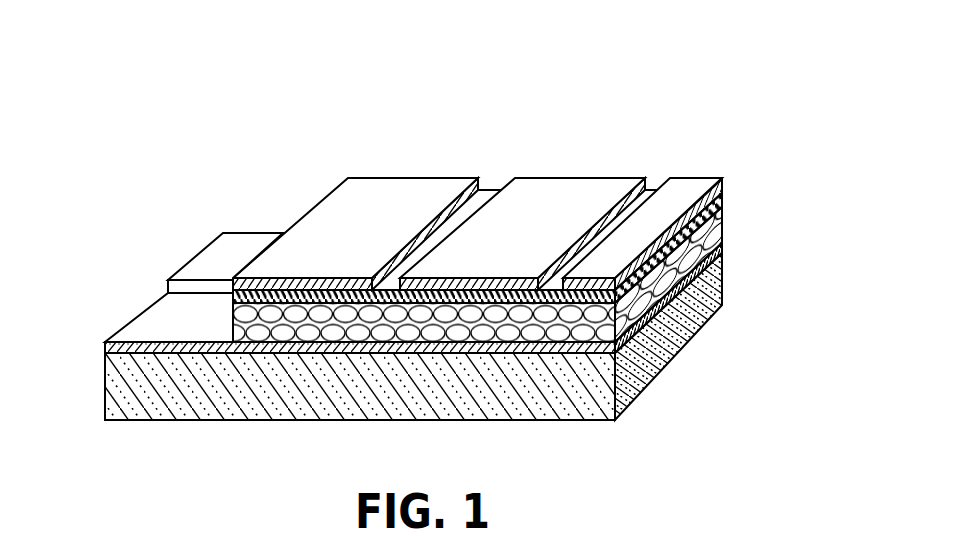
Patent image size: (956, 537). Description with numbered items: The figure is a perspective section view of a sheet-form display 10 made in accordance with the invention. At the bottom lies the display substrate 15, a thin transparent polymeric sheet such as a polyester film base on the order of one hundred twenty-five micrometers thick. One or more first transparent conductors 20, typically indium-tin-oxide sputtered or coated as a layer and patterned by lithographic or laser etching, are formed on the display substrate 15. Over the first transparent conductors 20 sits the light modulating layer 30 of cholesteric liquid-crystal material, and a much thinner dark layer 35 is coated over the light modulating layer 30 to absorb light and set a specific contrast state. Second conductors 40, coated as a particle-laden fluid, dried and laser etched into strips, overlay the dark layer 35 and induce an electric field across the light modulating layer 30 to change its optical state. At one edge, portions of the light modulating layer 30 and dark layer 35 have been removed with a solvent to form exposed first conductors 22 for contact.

The display 10 is at (312, 132).
The display substrate 15 is at (118, 390).
The first transparent conductors 20 is at (690, 246).
The exposed first conductors 22 is at (215, 255).
The light modulating layer 30 is at (722, 228).
The dark layer 35 is at (722, 198).
The second conductors 40 is at (435, 193).